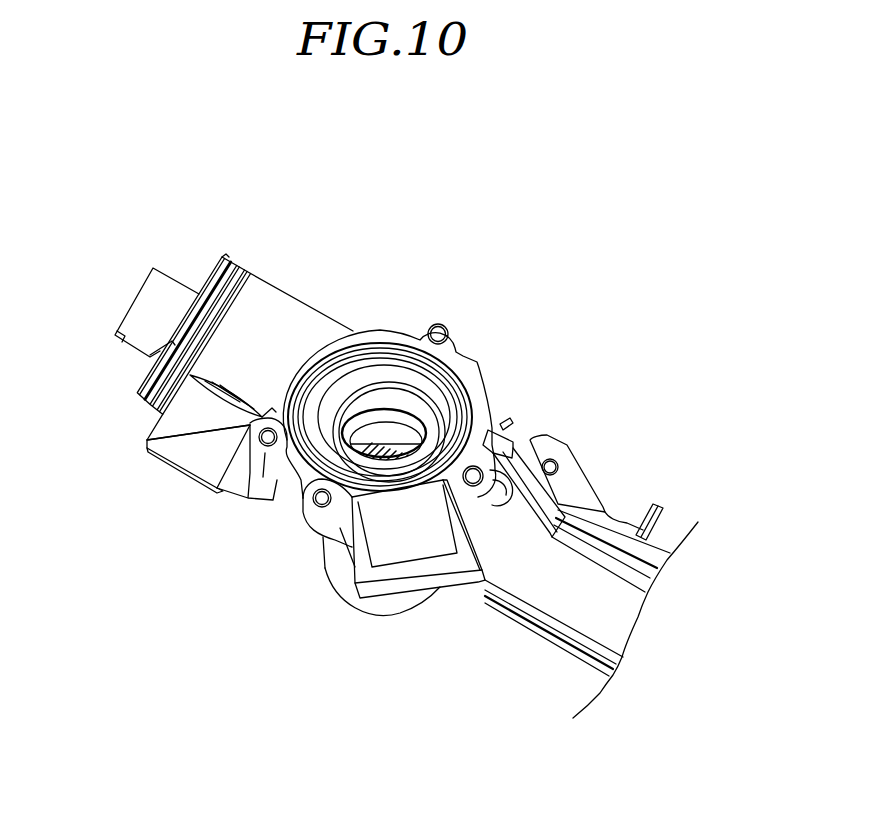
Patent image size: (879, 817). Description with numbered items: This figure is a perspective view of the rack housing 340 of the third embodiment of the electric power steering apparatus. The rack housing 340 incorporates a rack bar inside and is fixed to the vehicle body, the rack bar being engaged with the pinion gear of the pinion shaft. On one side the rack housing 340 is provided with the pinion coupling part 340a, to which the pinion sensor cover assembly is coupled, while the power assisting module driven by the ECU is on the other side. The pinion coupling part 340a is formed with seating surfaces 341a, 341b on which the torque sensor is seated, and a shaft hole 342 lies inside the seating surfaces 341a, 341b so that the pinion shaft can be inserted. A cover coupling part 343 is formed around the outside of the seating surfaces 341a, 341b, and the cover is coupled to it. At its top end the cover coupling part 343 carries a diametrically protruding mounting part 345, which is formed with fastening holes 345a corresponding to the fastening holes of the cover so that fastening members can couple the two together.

The rack housing 340 is at (273, 290).
The pinion coupling part 340a is at (506, 283).
The seating surface 341a is at (447, 415).
The seating surface 341b is at (382, 553).
The shaft hole 342 is at (390, 432).
The cover coupling part 343 is at (382, 335).
The mounting part 345 is at (147, 479).
The fastening hole 345a is at (253, 423).